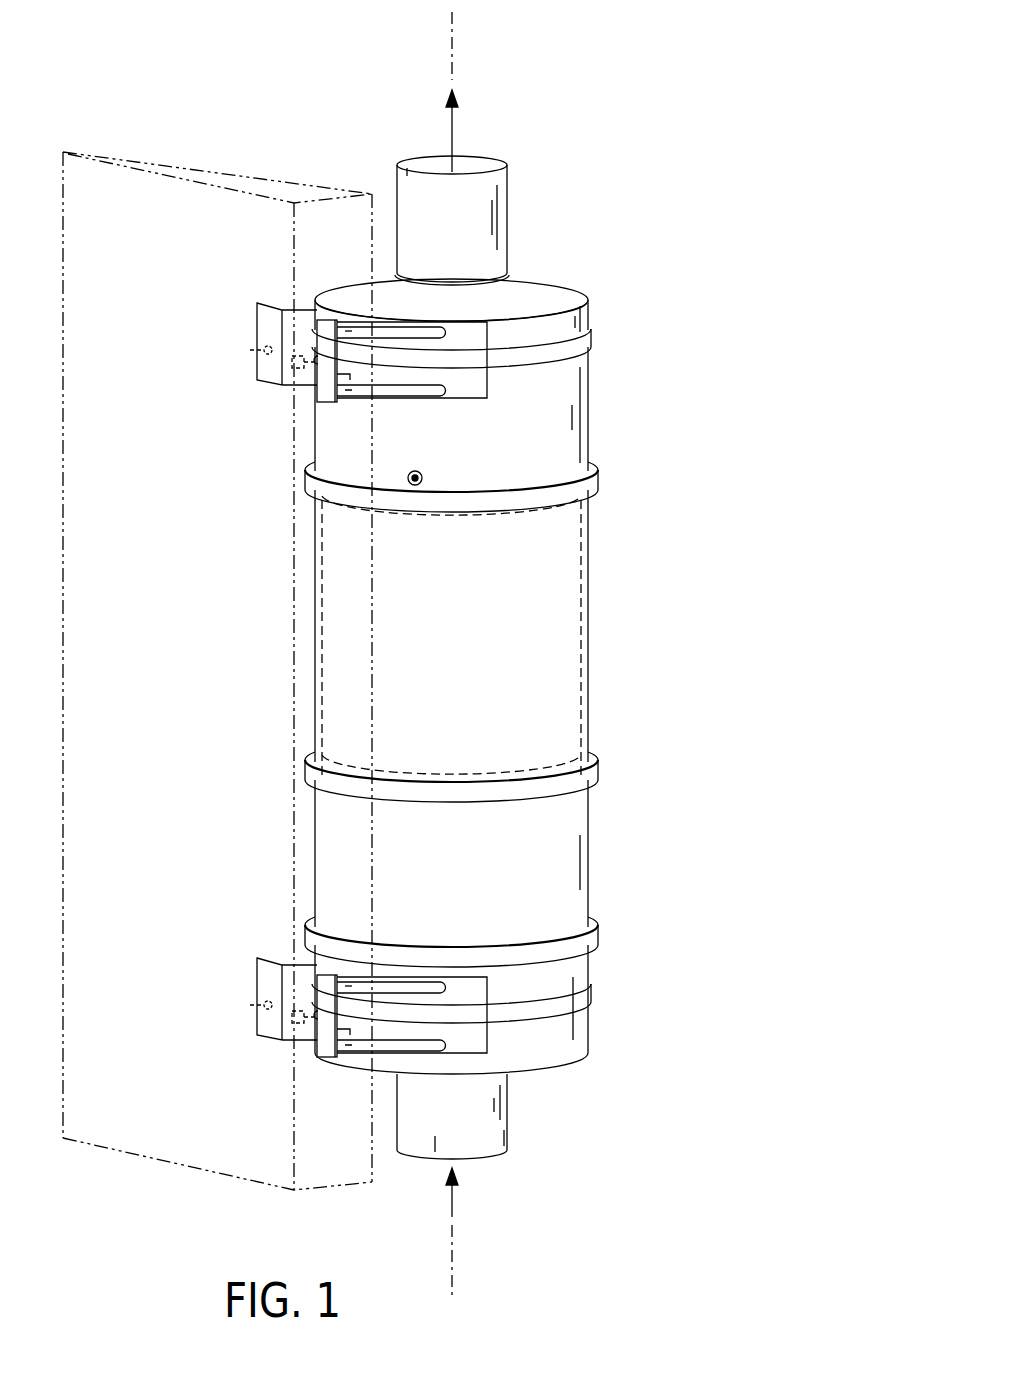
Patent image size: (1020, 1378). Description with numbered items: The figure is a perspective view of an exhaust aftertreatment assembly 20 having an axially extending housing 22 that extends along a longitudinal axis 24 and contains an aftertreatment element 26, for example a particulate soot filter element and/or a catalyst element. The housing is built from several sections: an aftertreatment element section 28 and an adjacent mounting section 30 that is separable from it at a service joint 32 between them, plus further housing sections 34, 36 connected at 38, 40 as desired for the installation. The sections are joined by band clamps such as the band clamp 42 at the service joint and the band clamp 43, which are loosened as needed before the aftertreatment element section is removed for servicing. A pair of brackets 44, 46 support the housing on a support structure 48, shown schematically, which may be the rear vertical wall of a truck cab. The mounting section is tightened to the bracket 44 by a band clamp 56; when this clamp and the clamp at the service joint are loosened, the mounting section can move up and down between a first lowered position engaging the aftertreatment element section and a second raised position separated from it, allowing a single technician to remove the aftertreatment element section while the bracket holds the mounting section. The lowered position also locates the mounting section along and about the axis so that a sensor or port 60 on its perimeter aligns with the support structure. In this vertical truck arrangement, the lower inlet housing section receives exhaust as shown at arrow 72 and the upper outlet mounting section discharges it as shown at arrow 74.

The exhaust aftertreatment assembly 20 is at (555, 244).
The housing 22 is at (590, 299).
The longitudinal axis 24 is at (453, 43).
The aftertreatment element 26 is at (580, 656).
The aftertreatment element section 28 is at (588, 575).
The mounting section 30 is at (592, 416).
The service joint 32 is at (590, 466).
The lower inlet housing section 34 is at (593, 1032).
The housing section 36 is at (590, 845).
The connection 38 is at (594, 920).
The connection 40 is at (598, 762).
The band clamp 42 is at (594, 489).
The band clamp 43 is at (598, 783).
The bracket 44 is at (460, 388).
The bracket 46 is at (474, 993).
The support structure 48 is at (210, 168).
The band clamp 56 is at (590, 344).
The sensor or port 60 is at (417, 474).
The arrow 72 is at (454, 1205).
The arrow 74 is at (453, 128).